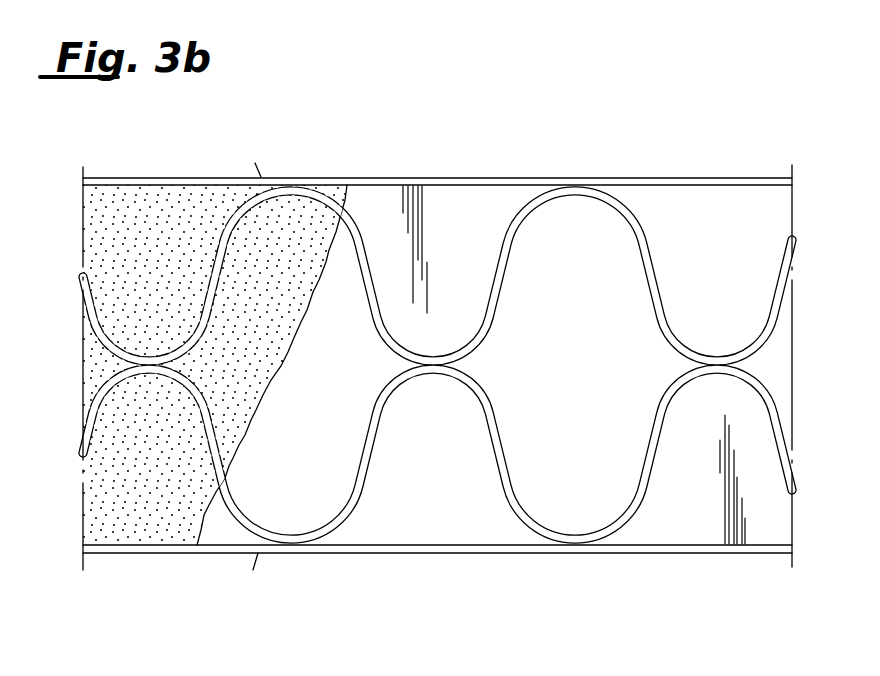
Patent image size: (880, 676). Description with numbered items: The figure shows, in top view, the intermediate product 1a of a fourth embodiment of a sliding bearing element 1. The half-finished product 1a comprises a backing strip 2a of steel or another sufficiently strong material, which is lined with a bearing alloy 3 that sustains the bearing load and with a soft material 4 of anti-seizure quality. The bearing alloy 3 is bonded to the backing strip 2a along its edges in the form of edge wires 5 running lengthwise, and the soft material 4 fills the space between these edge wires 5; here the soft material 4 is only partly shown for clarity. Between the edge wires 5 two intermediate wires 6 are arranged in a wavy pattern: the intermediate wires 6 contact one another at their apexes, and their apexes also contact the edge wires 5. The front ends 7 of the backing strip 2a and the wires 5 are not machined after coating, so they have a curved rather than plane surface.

The sliding bearing element 1 is at (770, 113).
The intermediate product 1a is at (535, 167).
The backing strip 2a is at (682, 520).
The bearing alloy 3 is at (648, 175).
The soft material 4 is at (163, 213).
The edge wires 5 is at (468, 178).
The intermediate wires 6 is at (657, 312).
The front ends 7 is at (262, 176).